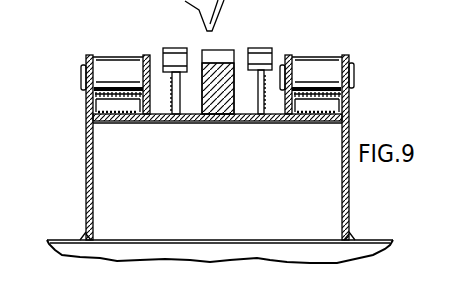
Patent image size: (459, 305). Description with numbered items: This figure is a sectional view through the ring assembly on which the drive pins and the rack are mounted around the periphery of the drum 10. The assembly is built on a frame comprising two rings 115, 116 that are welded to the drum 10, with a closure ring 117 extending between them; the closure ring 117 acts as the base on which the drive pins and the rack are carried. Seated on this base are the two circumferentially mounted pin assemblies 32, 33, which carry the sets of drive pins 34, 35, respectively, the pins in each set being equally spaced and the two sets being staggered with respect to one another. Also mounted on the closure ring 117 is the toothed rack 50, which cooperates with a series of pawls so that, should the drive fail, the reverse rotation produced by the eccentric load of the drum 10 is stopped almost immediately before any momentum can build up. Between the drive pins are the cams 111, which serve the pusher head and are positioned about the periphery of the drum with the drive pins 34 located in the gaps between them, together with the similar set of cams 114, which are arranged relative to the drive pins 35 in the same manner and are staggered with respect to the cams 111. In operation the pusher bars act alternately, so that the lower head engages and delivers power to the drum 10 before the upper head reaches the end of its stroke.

The drum 10 is at (372, 236).
The pin assembly 32 is at (326, 59).
The pin assembly 33 is at (97, 65).
The drive pins 34 is at (318, 62).
The drive pins 35 is at (118, 69).
The toothed rack 50 is at (220, 61).
The cams 111 is at (255, 50).
The cams 114 is at (170, 50).
The ring 115 is at (350, 188).
The ring 116 is at (86, 173).
The closure ring 117 is at (303, 121).